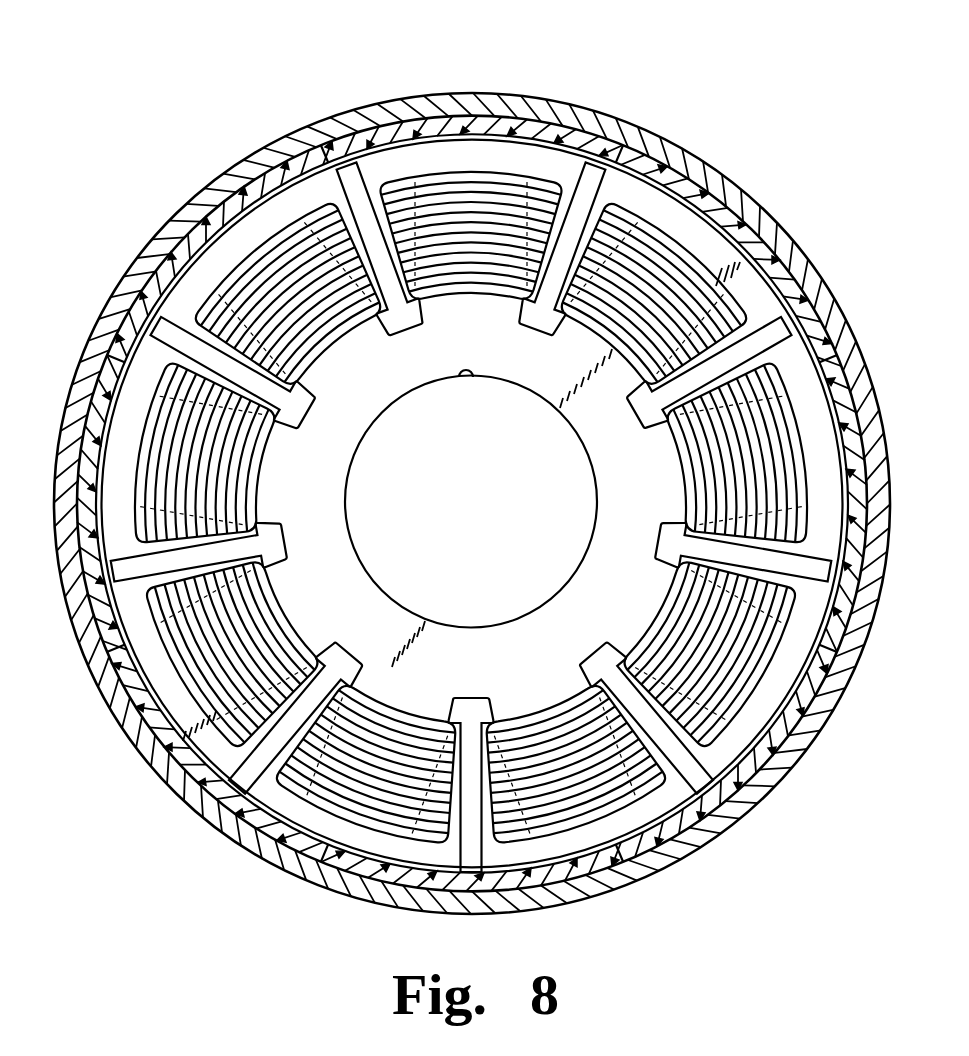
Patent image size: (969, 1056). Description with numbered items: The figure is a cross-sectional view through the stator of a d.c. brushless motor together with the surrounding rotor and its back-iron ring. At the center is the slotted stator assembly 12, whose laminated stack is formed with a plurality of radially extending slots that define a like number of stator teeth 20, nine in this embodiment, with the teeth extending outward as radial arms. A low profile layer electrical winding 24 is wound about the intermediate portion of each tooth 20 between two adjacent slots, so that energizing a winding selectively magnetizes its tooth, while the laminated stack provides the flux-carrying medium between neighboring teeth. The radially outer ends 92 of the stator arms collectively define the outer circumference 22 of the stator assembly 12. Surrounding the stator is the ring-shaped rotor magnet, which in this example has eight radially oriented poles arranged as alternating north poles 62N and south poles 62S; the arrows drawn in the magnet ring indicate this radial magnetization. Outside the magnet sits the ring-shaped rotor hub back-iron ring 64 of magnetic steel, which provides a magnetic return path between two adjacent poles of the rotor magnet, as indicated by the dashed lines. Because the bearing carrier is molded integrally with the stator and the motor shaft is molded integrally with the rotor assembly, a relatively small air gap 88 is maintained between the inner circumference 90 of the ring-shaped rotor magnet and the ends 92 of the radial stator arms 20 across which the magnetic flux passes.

The stator assembly 12 is at (402, 385).
The stator teeth 20 is at (707, 245).
The outer circumference 22 is at (730, 826).
The electrical winding 24 is at (487, 172).
The north rotor pole 62N is at (213, 200).
The south rotor pole 62S is at (440, 116).
The back-iron ring 64 is at (808, 292).
The air gap 88 is at (110, 368).
The inner circumference 90 is at (112, 462).
The ends of stator arms 92 is at (80, 490).